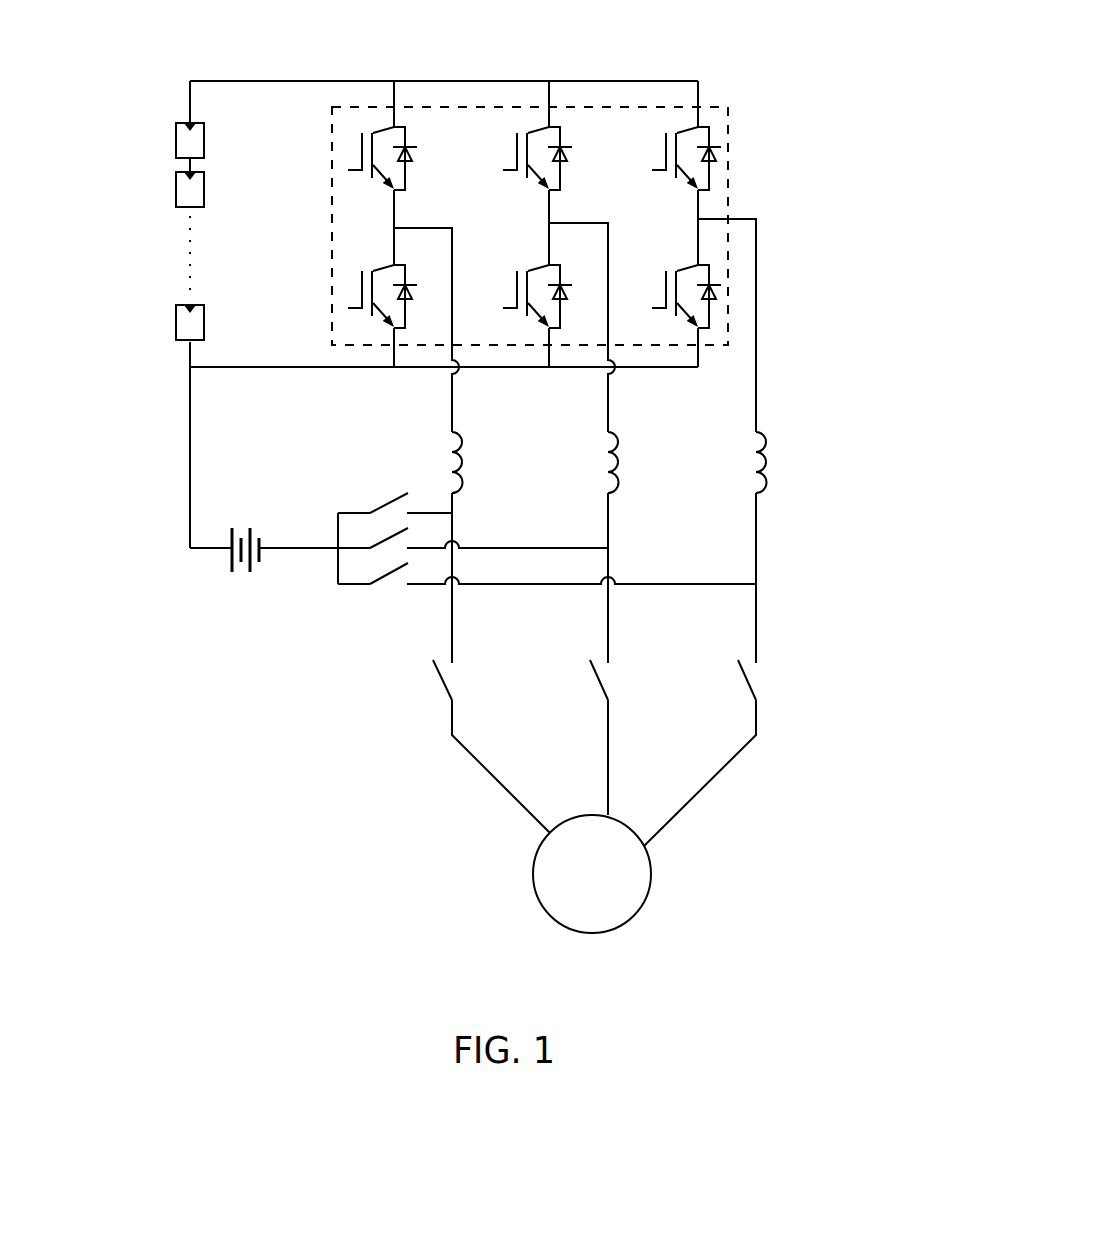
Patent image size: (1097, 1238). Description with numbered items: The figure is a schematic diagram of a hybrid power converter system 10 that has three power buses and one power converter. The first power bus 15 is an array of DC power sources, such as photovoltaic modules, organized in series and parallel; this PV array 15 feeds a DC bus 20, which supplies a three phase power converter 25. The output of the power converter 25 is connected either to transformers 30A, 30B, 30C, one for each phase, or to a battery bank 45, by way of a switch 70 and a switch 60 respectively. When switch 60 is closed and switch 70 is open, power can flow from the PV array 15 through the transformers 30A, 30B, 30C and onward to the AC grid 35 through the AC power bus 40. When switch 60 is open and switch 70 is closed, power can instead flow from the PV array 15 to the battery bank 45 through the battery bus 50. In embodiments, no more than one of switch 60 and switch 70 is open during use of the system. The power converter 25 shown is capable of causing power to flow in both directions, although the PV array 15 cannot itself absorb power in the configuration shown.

The hybrid power converter system 10 is at (400, 797).
The first power bus 15 is at (160, 115).
The DC bus 20 is at (296, 80).
The three phase power converter 25 is at (708, 106).
The transformer 30A is at (453, 432).
The transformer 30B is at (609, 432).
The transformer 30C is at (757, 432).
The AC grid 35 is at (641, 916).
The AC power bus 40 is at (750, 796).
The battery bank 45 is at (233, 585).
The battery bus 50 is at (272, 552).
The switch 60 is at (378, 490).
The switch 70 is at (773, 673).